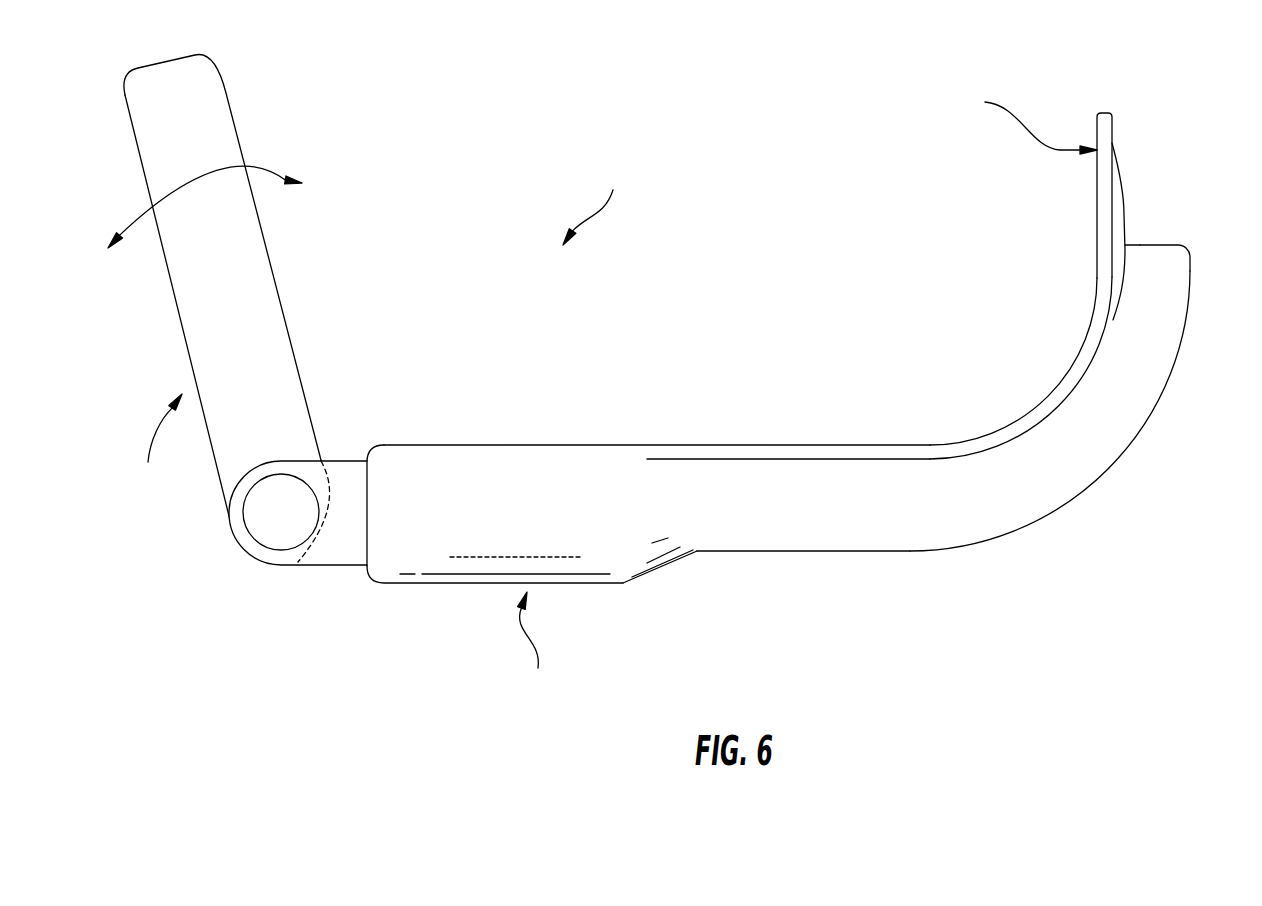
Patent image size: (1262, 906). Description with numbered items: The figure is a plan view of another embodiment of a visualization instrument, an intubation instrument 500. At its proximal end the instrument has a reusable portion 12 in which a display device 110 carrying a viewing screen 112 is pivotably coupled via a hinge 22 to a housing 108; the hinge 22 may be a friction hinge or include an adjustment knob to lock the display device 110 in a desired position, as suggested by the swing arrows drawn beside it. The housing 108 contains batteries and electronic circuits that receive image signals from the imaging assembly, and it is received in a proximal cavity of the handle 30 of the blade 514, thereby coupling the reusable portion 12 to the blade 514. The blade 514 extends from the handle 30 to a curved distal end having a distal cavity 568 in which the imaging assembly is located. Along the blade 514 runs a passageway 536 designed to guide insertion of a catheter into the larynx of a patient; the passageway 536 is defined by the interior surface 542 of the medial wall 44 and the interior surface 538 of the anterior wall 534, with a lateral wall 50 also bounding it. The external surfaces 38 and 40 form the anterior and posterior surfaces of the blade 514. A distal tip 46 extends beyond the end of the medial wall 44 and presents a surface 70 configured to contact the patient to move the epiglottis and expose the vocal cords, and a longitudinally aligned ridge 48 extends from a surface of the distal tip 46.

The reusable portion 12 is at (161, 448).
The hinge 22 is at (272, 535).
The handle 30 is at (813, 395).
The surface 38 is at (847, 446).
The surface 40 is at (918, 551).
The medial wall 44 is at (1135, 243).
The distal tip 46 is at (1027, 117).
The ridge 48 is at (1122, 195).
The lateral wall 50 is at (623, 583).
The surface 70 is at (1097, 186).
The housing 108 is at (342, 477).
The display device 110 is at (200, 286).
The viewing screen 112 is at (165, 268).
The intubation instrument 500 is at (598, 203).
The blade 514 is at (505, 633).
The anterior wall 534 is at (730, 428).
The passageway 536 is at (888, 502).
The interior surface 538 is at (826, 458).
The interior surface 542 is at (853, 507).
The distal cavity 568 is at (1162, 243).